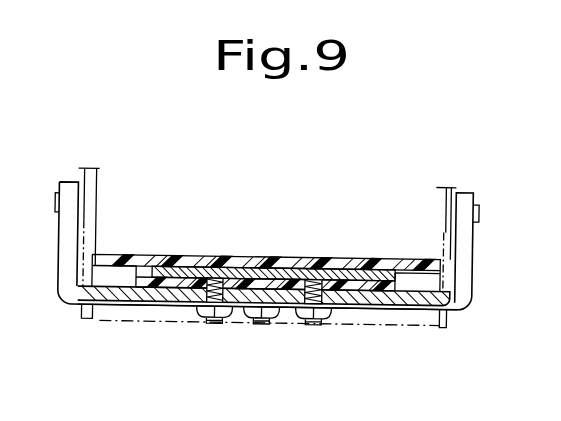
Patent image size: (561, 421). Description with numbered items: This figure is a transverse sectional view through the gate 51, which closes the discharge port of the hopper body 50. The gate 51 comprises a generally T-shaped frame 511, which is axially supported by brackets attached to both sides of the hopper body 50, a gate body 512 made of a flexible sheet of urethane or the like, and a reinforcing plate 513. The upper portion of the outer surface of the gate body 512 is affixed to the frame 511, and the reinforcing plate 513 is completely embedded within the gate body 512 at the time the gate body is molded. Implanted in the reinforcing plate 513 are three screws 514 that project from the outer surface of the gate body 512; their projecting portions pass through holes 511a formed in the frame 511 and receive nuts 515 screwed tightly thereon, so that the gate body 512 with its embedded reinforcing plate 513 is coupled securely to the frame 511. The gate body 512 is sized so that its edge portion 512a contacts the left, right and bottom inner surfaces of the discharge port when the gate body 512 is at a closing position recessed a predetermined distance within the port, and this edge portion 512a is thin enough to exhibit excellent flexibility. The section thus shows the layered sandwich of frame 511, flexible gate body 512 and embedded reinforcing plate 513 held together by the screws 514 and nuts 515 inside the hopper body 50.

The hopper body 50 is at (440, 213).
The gate 51 is at (305, 256).
The frame 511 is at (420, 304).
The holes 511a is at (188, 320).
The gate body 512 is at (367, 257).
The edge portion 512a is at (113, 256).
The reinforcing plate 513 is at (202, 256).
The screws 514 is at (214, 306).
The nuts 515 is at (246, 326).